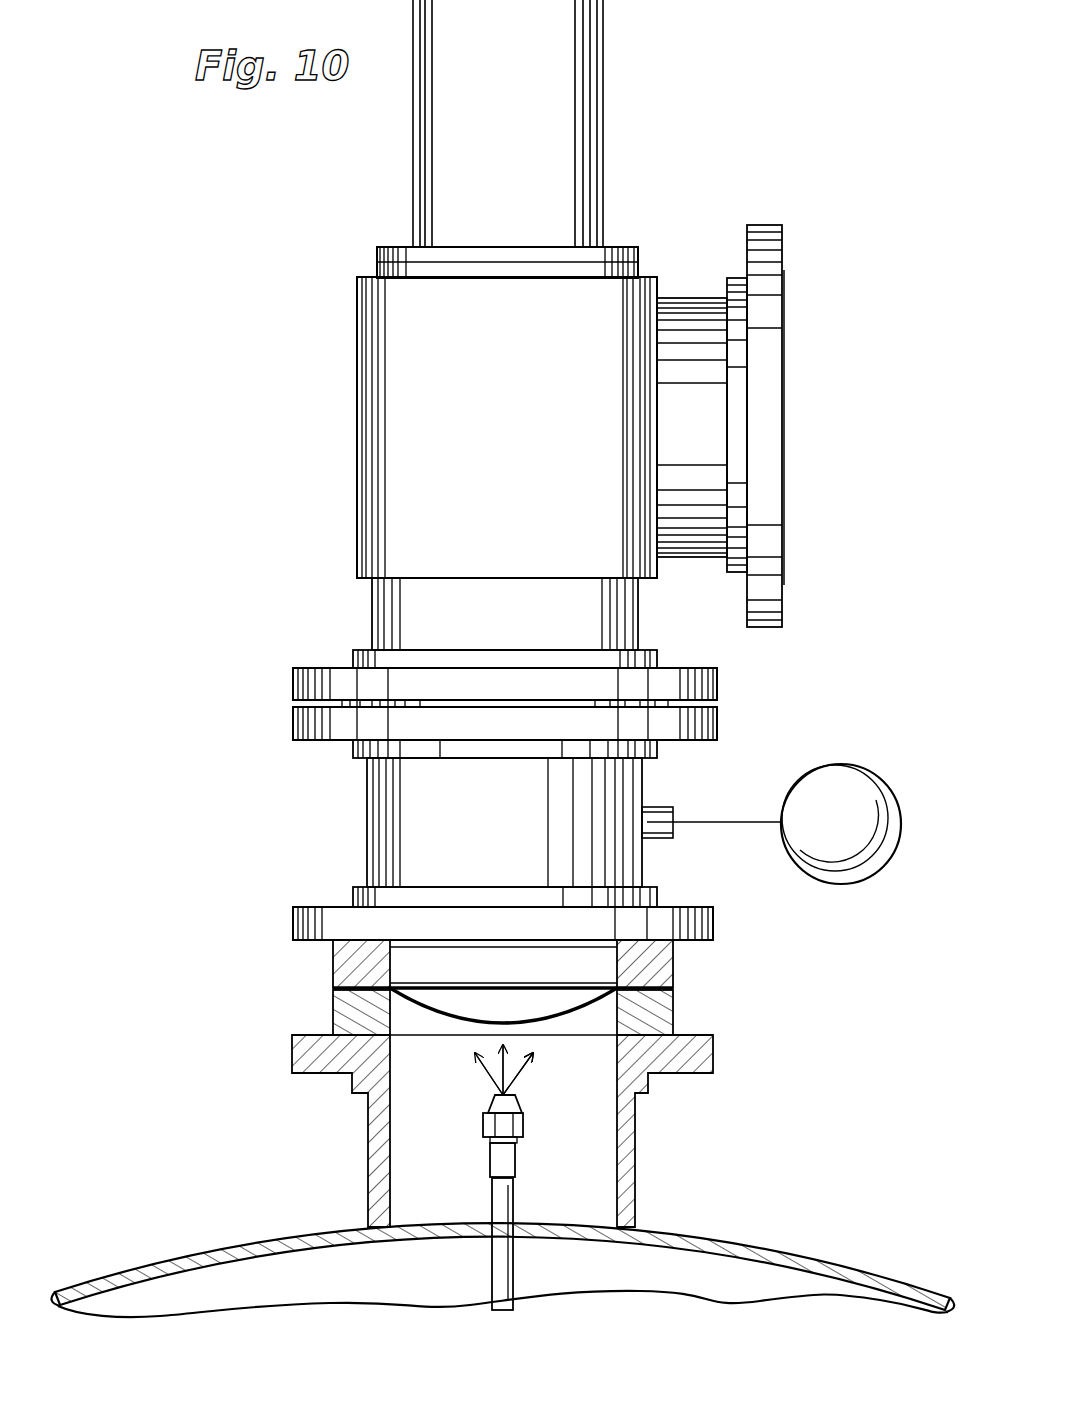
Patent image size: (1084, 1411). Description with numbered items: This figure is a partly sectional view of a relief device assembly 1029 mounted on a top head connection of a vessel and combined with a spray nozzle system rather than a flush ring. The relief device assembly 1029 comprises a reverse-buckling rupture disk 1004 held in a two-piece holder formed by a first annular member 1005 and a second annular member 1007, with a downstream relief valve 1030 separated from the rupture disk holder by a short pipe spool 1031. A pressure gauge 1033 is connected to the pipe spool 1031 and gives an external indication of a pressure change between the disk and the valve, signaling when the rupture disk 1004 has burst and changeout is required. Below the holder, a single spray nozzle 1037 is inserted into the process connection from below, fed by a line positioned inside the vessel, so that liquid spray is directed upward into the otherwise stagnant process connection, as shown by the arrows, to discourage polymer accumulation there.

The relief device assembly 1029 is at (850, 712).
The relief valve 1030 is at (657, 282).
The pipe spool 1031 is at (367, 808).
The pressure gauge 1033 is at (848, 885).
The reverse-buckling rupture disk 1004 is at (408, 1003).
The first annular member 1005 is at (665, 966).
The second annular member 1007 is at (665, 1010).
The spray nozzle 1037 is at (514, 1303).